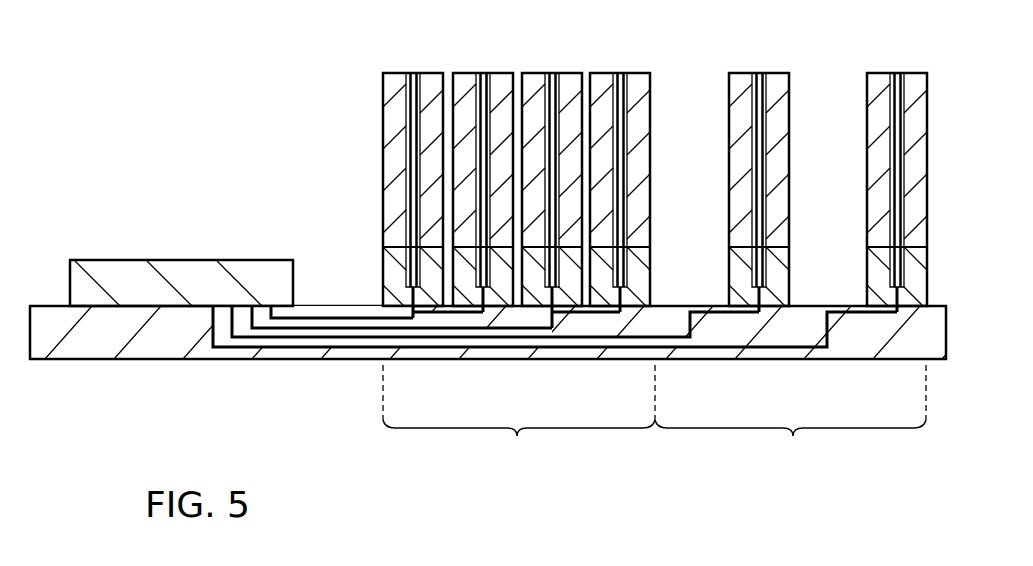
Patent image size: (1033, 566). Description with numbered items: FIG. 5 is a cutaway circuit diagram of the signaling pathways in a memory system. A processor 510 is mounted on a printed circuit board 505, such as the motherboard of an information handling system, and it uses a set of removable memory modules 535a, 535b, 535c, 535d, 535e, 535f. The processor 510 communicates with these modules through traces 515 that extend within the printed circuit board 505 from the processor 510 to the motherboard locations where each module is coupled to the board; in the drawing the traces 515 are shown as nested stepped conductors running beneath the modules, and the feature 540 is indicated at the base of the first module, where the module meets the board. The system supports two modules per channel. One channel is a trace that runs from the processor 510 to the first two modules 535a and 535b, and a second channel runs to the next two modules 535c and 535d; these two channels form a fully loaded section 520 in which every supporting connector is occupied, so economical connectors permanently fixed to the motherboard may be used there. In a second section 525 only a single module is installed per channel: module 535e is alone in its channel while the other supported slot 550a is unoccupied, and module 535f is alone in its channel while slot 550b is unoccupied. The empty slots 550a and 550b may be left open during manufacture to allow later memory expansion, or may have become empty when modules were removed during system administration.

The printed circuit board 505 is at (88, 352).
The processor 510 is at (118, 270).
The traces 515 is at (510, 340).
The fully loaded section 520 is at (519, 443).
The second section 525 is at (790, 443).
The removable memory module 535a is at (393, 164).
The removable memory module 535b is at (461, 80).
The removable memory module 535c is at (570, 80).
The removable memory module 535d is at (640, 80).
The removable memory module 535e is at (777, 80).
The removable memory module 535f is at (913, 80).
The connector / socket 540 is at (366, 262).
The unoccupied slot 550a is at (689, 275).
The unoccupied slot 550b is at (828, 275).